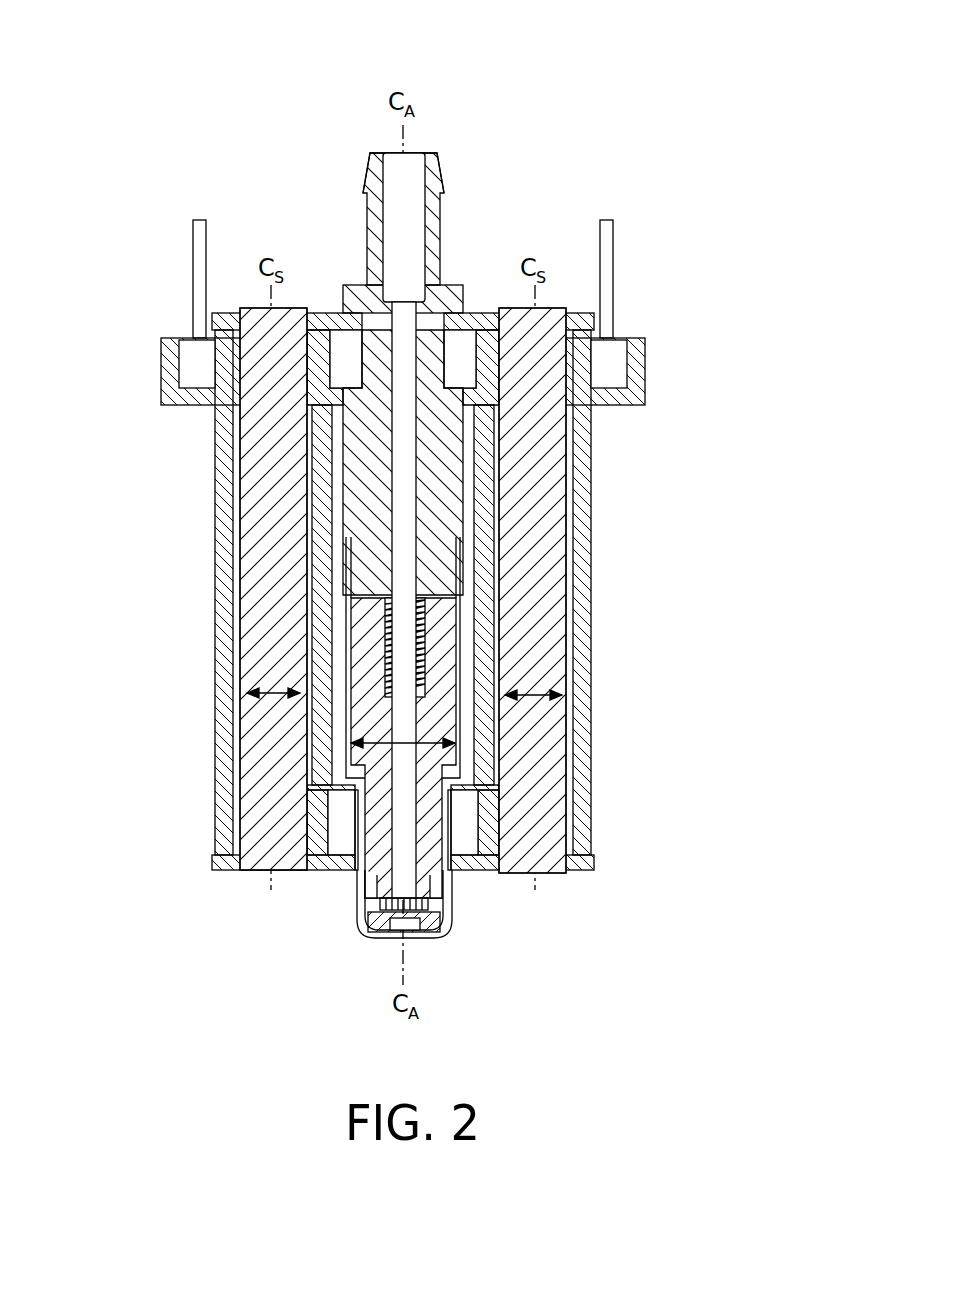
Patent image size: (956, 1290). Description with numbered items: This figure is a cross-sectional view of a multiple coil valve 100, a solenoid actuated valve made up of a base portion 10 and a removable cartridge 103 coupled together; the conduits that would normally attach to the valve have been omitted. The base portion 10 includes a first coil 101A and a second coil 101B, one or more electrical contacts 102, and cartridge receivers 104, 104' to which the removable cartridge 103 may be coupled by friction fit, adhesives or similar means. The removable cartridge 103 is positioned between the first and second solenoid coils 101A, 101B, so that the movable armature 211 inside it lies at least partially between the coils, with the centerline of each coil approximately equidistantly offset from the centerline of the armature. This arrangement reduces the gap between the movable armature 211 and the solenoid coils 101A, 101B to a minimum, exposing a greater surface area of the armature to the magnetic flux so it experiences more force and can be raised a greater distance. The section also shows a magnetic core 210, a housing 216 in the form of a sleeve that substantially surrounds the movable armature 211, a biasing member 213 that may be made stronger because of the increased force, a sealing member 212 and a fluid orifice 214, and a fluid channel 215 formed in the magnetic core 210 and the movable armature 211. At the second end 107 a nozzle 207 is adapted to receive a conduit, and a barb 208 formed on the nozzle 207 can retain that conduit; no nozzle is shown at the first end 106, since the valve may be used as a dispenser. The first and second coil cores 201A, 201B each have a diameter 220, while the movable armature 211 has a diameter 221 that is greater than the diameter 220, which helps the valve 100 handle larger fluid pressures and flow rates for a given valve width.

The multiple coil valve 100 is at (690, 92).
The base portion 10 is at (603, 877).
The first coil 101A is at (240, 596).
The second coil 101B is at (580, 577).
The electrical contacts 102 is at (197, 240).
The removable cartridge 103 is at (465, 543).
The cartridge receiver 104 is at (522, 901).
The cartridge receiver 104' is at (474, 310).
The first end 106 is at (378, 994).
The second end 107 is at (420, 143).
The first coil core 201A is at (255, 872).
The second coil core 201B is at (546, 874).
The nozzle 207 is at (372, 235).
The barb 208 is at (441, 190).
The magnetic core 210 is at (443, 489).
The movable armature 211 is at (443, 718).
The sealing member 212 is at (380, 925).
The biasing member 213 is at (423, 638).
The fluid orifice 214 is at (398, 936).
The fluid channel 215 is at (403, 448).
The housing 216 is at (357, 884).
The diameter of coil cores 220 is at (247, 692).
The diameter of movable armature 221 is at (455, 745).